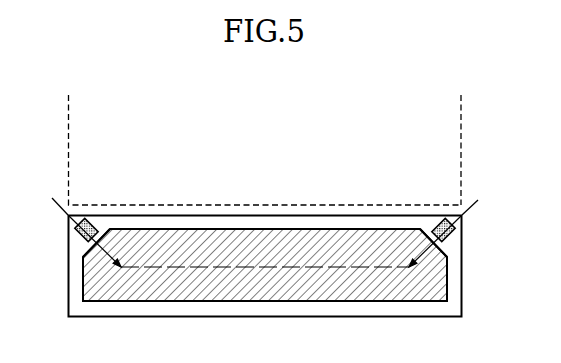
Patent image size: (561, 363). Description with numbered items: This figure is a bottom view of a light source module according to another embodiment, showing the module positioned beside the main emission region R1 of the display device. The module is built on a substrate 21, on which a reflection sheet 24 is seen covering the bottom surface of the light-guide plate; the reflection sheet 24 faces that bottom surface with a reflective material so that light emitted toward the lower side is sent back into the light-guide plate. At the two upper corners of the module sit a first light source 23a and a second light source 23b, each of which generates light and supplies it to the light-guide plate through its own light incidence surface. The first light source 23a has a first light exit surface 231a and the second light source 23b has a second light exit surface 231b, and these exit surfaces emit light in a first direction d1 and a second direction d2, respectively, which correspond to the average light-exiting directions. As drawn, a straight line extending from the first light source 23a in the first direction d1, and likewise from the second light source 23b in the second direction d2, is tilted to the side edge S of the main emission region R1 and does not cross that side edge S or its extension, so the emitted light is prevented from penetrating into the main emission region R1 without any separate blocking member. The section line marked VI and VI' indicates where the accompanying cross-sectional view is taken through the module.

The substrate 21 is at (68, 273).
The reflection sheet 24 is at (265, 302).
The first light source 23a is at (78, 226).
The second light source 23b is at (452, 225).
The first light exit surface 231a is at (111, 230).
The second light exit surface 231b is at (420, 230).
The first direction d1 is at (93, 257).
The second direction d2 is at (437, 256).
The main emission region R1 is at (452, 120).
The side edge S is at (438, 204).
The section line VI is at (47, 196).
The section line VI' is at (482, 196).